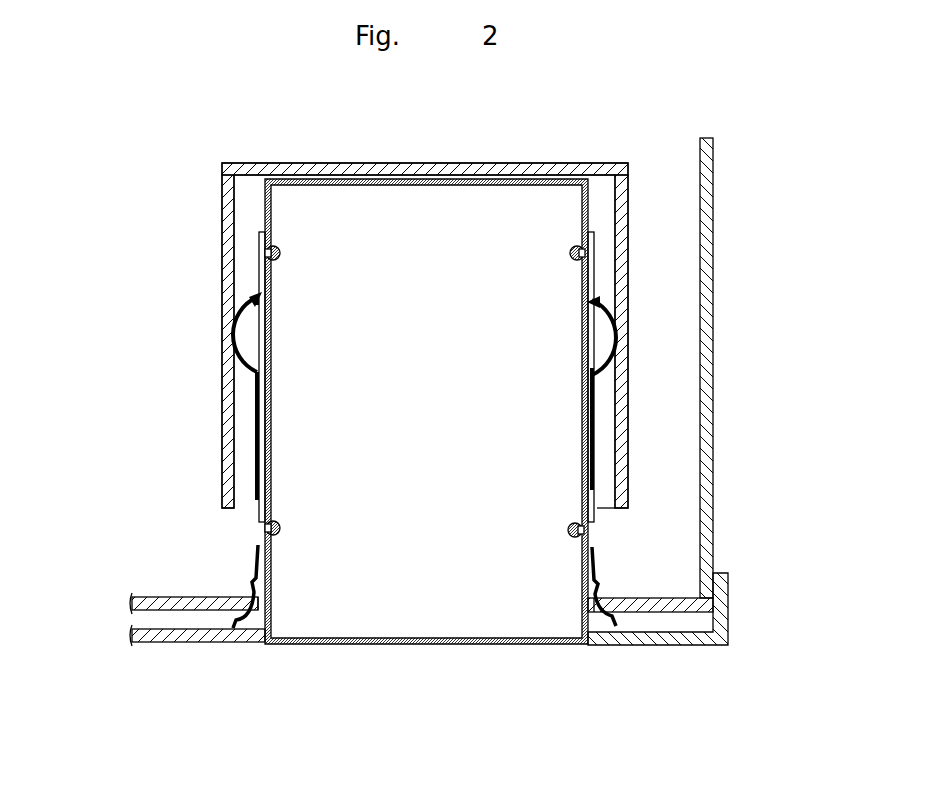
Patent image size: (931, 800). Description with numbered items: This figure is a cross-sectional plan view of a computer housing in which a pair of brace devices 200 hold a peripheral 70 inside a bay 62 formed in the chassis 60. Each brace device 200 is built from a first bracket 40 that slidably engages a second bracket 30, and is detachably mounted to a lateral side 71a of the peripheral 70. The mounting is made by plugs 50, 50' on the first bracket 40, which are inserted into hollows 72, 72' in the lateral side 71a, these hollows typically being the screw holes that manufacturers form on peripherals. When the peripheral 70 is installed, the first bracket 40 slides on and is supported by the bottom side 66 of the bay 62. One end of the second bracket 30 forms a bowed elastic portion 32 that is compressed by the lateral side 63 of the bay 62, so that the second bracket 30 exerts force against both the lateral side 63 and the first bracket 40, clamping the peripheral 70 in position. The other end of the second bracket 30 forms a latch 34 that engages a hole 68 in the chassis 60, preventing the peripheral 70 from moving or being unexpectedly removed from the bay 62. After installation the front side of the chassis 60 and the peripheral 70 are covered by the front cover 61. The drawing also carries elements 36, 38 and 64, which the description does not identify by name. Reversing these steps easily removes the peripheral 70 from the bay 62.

The second bracket 30 is at (598, 353).
The bowed elastic portion 32 is at (618, 310).
The latch 34 is at (580, 612).
The seal body 36 is at (590, 393).
The lower seal portion 38 is at (585, 462).
The first bracket 40 is at (583, 323).
The plug 50 is at (424, 515).
The plug 50' is at (425, 241).
The chassis 60 is at (742, 252).
The front cover 61 is at (745, 612).
The bay 62 is at (178, 248).
The lateral side 63 is at (222, 300).
The top wall 64 is at (533, 170).
The bottom side 66 is at (610, 500).
The hole 68 is at (590, 610).
The peripheral 70 is at (422, 620).
The lateral side 71a is at (259, 405).
The hollow 72 is at (424, 541).
The hollow 72' is at (425, 265).
The brace device 200 is at (458, 333).